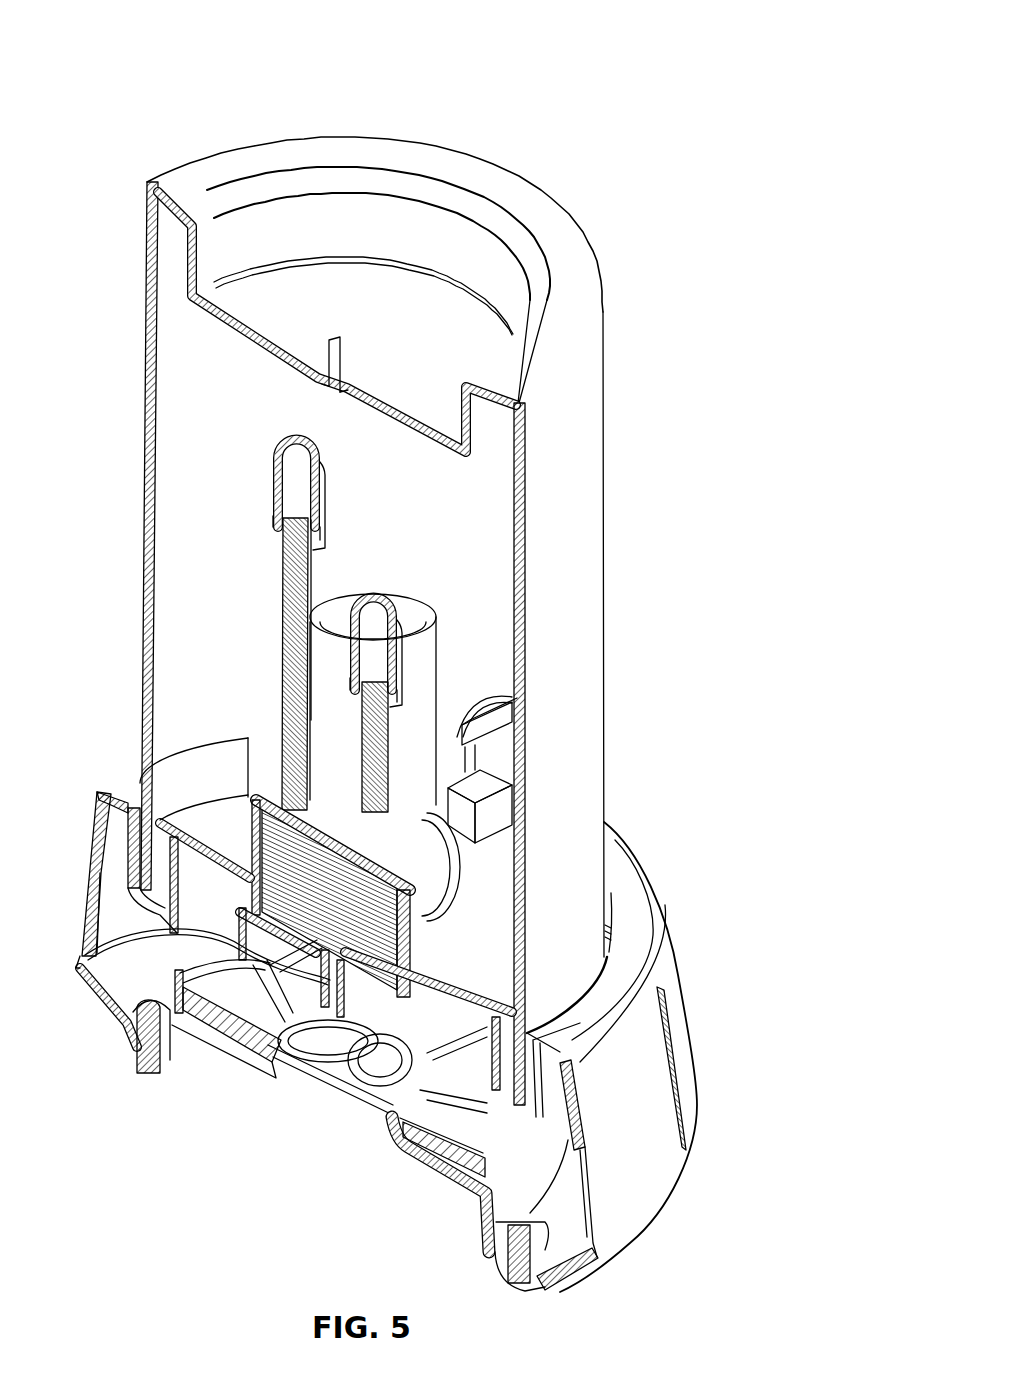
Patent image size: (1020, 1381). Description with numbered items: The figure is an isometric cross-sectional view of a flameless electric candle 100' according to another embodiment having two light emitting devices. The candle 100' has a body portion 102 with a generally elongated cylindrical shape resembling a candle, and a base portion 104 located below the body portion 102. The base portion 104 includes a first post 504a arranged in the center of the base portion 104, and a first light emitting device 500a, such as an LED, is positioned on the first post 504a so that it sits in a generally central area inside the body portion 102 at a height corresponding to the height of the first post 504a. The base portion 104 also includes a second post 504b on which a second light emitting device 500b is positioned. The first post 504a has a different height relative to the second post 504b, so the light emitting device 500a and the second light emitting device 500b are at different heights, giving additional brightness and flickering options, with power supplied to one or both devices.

The candle 100' is at (435, 648).
The body portion 102 is at (605, 528).
The base portion 104 is at (690, 1044).
The light emitting device 500a is at (273, 470).
The first post 504a is at (283, 611).
The second light emitting device 500b is at (392, 668).
The second post 504b is at (390, 808).